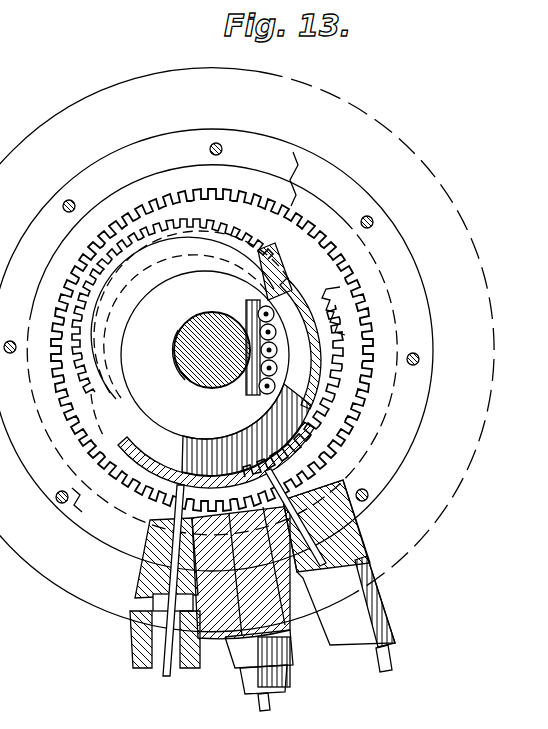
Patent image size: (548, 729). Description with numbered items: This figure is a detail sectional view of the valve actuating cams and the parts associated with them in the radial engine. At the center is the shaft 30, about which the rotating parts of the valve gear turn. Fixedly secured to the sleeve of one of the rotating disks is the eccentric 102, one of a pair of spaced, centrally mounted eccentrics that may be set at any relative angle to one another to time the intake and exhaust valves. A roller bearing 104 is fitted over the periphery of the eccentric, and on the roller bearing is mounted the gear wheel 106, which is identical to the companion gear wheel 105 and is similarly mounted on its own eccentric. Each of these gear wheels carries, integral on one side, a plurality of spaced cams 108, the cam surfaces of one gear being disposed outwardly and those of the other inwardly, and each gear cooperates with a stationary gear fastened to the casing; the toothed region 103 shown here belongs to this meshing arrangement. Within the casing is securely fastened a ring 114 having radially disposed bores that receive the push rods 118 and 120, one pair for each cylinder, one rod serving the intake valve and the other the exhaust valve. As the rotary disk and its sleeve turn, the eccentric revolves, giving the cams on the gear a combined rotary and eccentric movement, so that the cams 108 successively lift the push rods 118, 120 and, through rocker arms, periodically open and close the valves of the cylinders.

The shaft 30 is at (208, 358).
The eccentric 102 is at (205, 355).
The outer race band 103 is at (333, 427).
The roller bearing 104 is at (300, 345).
The gear wheel 105 is at (328, 307).
The gear wheel 106 is at (221, 235).
The cams 108 is at (270, 266).
The ring 114 is at (364, 518).
The push rod 118 is at (160, 580).
The push rod 120 is at (155, 520).